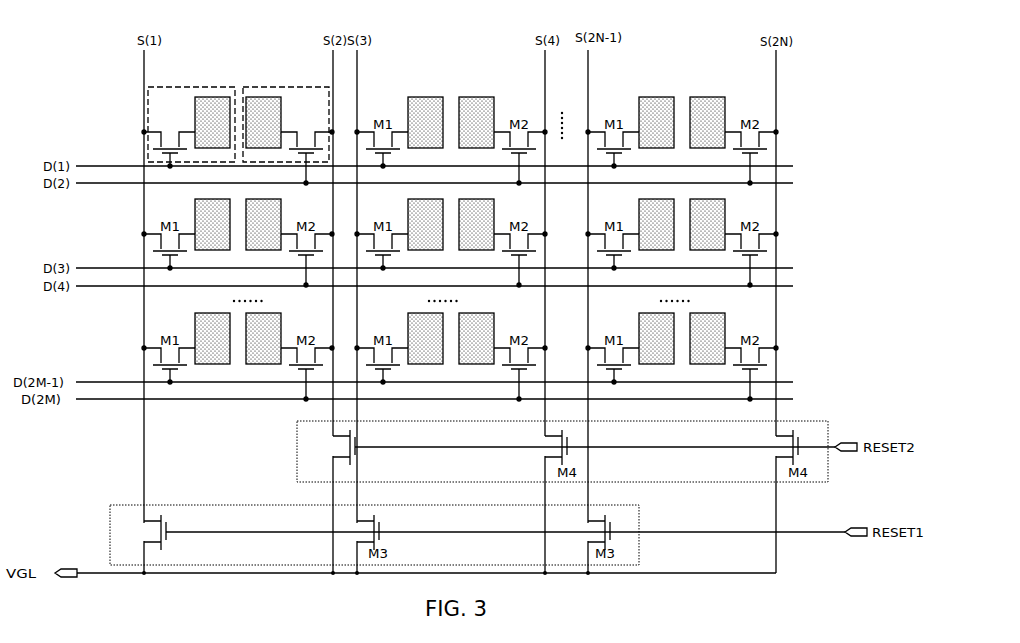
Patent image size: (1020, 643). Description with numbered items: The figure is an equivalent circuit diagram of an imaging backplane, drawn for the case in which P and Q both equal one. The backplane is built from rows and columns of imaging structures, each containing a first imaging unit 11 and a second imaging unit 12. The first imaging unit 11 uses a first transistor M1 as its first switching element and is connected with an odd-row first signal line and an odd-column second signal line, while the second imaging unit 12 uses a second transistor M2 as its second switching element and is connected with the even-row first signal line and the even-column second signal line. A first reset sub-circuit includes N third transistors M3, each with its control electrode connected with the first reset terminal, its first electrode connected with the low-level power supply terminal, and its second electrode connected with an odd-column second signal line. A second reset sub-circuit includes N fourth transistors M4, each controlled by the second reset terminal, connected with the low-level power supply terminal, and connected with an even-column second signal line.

The first imaging unit 11 is at (187, 87).
The second imaging unit 12 is at (281, 87).
The first transistor M1 is at (168, 142).
The second transistor M2 is at (307, 151).
The third transistor M3 is at (147, 532).
The fourth transistor M4 is at (336, 447).